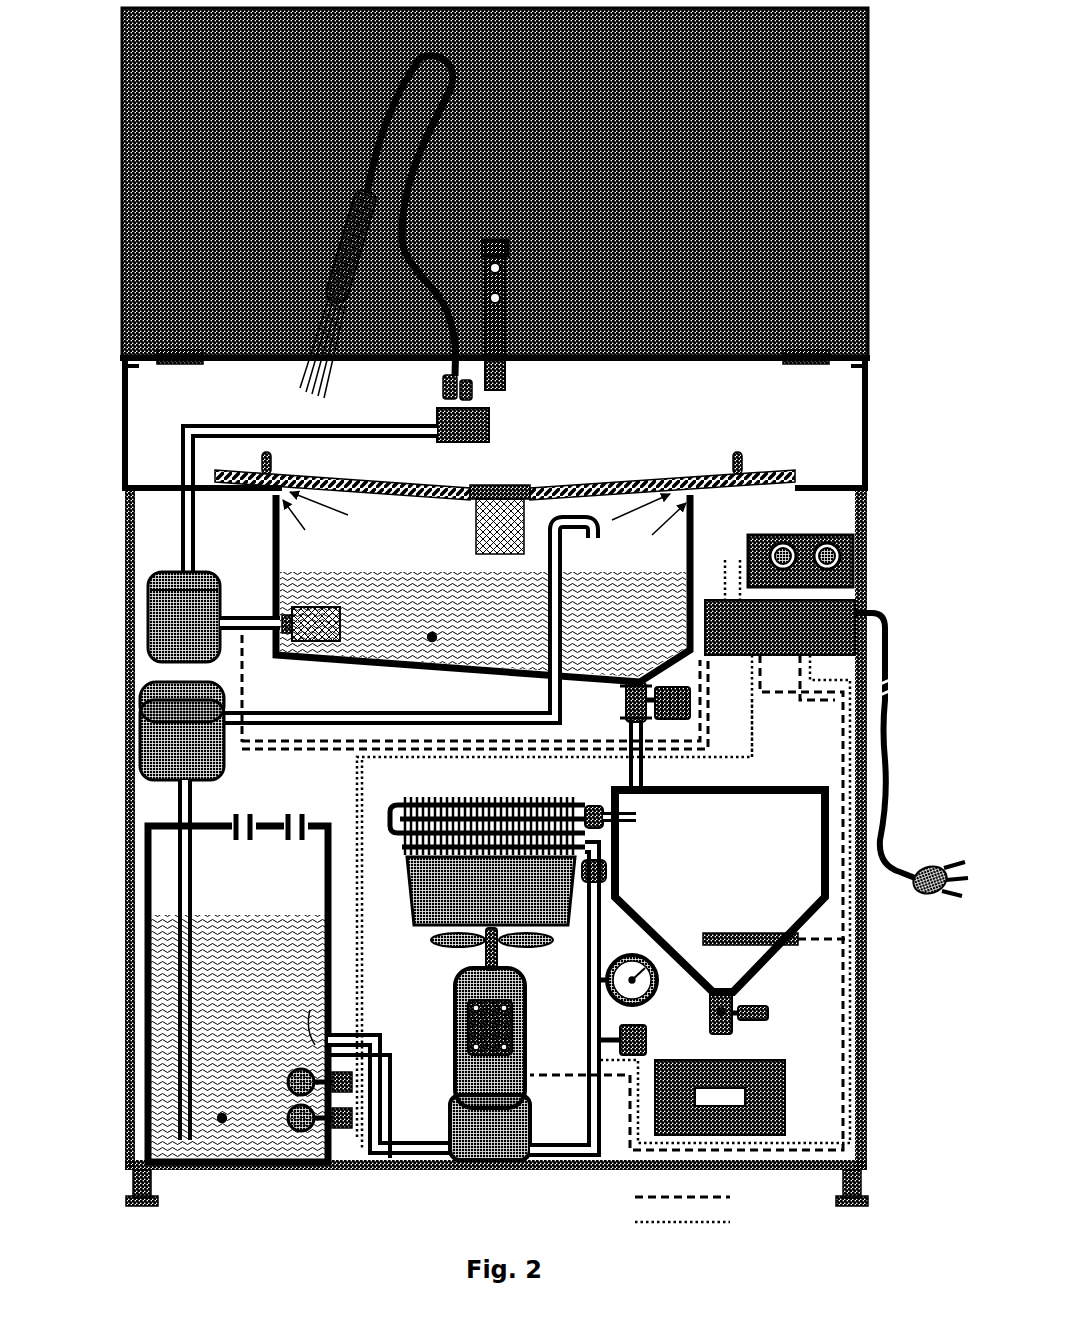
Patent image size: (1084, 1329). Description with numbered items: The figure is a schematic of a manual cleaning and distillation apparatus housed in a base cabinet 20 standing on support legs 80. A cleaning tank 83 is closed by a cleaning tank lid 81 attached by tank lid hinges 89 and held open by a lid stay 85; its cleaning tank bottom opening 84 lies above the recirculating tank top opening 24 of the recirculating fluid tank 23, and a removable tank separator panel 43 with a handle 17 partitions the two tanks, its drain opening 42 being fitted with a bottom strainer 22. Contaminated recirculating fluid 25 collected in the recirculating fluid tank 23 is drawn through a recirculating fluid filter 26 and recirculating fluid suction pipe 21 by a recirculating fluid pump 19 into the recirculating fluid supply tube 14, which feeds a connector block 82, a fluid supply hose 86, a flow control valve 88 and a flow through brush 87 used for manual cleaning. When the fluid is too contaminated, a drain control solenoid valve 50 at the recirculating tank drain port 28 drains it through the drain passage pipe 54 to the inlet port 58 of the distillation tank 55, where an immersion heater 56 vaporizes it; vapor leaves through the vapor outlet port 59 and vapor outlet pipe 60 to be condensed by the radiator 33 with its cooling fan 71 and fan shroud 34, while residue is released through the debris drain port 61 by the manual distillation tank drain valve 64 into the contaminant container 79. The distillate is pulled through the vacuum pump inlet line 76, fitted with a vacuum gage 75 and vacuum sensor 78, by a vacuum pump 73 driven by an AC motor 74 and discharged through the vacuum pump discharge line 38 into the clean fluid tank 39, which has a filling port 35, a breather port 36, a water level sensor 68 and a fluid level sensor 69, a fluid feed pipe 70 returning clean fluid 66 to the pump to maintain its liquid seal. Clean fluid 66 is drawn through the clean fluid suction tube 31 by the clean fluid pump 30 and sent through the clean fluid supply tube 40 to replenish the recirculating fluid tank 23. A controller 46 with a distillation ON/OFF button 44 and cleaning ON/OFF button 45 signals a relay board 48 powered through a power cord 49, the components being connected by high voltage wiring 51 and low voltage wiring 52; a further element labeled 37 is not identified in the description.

The recirculating fluid supply tube 14 is at (208, 424).
The handle 17 is at (272, 458).
The recirculating fluid pump 19 is at (192, 575).
The base cabinet 20 is at (139, 710).
The recirculating fluid suction pipe 21 is at (255, 641).
The bottom strainer 22 is at (477, 512).
The recirculating fluid tank 23 is at (365, 665).
The recirculating tank top opening 24 is at (484, 531).
The recirculating fluid 25 is at (432, 643).
The recirculating fluid filter 26 is at (305, 646).
The recirculating tank drain port 28 is at (636, 680).
The clean fluid pump 30 is at (225, 748).
The clean fluid suction tube 31 is at (193, 805).
The radiator 33 is at (453, 798).
The fan shroud 34 is at (560, 920).
The clean fluid tank filling port 35 is at (243, 846).
The clean fluid tank breather port 36 is at (299, 843).
The level sensor 37 is at (310, 1008).
The vacuum pump discharge line 38 is at (368, 1035).
The clean fluid tank 39 is at (148, 1058).
The clean fluid supply tube 40 is at (549, 708).
The drain opening of tank separator panel 42 is at (506, 485).
The tank separator panel 43 is at (660, 475).
The distillation ON/OFF button 44 is at (781, 543).
The cleaning ON/OFF button 45 is at (830, 543).
The controller 46 is at (853, 559).
The relay board 48 is at (770, 657).
The power cord with plug 49 is at (887, 643).
The drain control solenoid valve 50 is at (624, 713).
The high voltage wiring 51 is at (637, 1197).
The low voltage wiring 52 is at (637, 1222).
The drain passage pipe 54 is at (640, 782).
The distillation tank 55 is at (825, 790).
The immersion heater 56 is at (745, 933).
The inlet port of distillation tank 58 is at (640, 818).
The vapor outlet port of distillation tank 59 is at (610, 837).
The vapor outlet pipe 60 is at (601, 802).
The debris drain port of distillation tank 61 is at (715, 990).
The manual distillation tank drain valve 64 is at (767, 1017).
The clean fluid 66 is at (222, 1123).
The water level sensor 68 is at (305, 1147).
The fluid level sensor 69 is at (297, 1069).
The fluid feed pipe for vacuum pump 70 is at (395, 1160).
The cooling fan 71 is at (443, 945).
The vacuum pump 73 is at (450, 1112).
The AC motor 74 is at (453, 1053).
The vacuum gage 75 is at (658, 982).
The vacuum pump inlet line 76 is at (573, 1140).
The vacuum sensor 78 is at (645, 1045).
The contaminant container 79 is at (785, 1088).
The support leg 80 is at (843, 1188).
The lid 81 is at (122, 90).
The connector block 82 is at (490, 425).
The cleaning tank 83 is at (125, 412).
The cleaning tank bottom opening 84 is at (348, 515).
The lid stay 85 is at (507, 370).
The fluid supply hose 86 is at (385, 112).
The flow through brush 87 is at (335, 286).
The flow control valve 88 is at (442, 395).
The cleaning tank lid hinge 89 is at (190, 364).